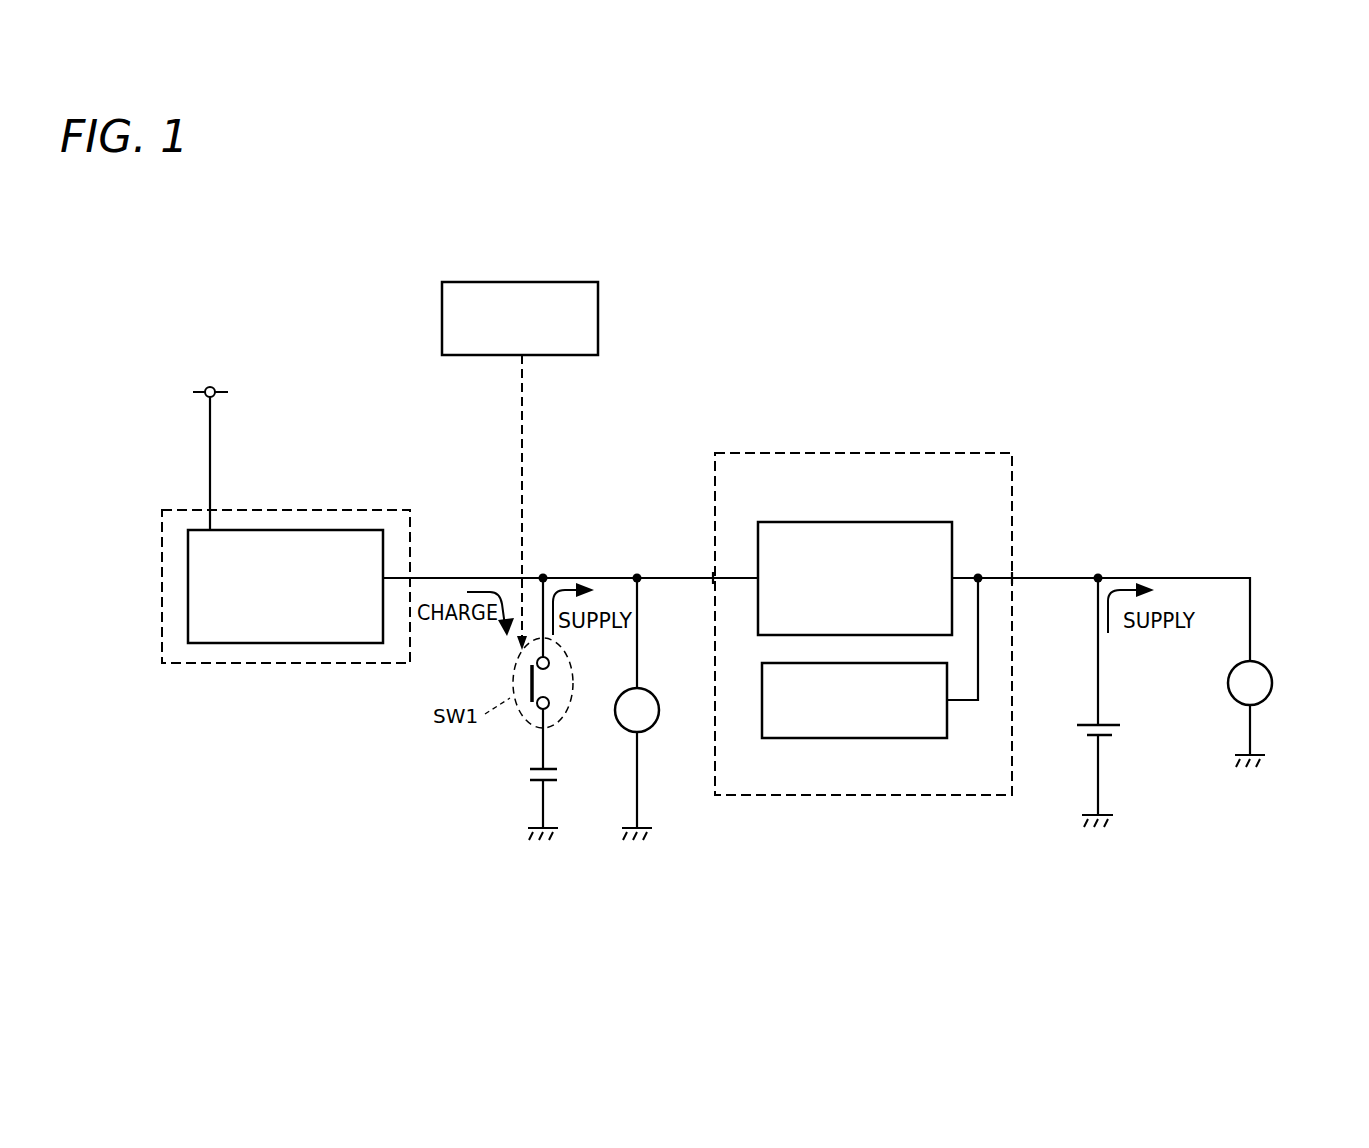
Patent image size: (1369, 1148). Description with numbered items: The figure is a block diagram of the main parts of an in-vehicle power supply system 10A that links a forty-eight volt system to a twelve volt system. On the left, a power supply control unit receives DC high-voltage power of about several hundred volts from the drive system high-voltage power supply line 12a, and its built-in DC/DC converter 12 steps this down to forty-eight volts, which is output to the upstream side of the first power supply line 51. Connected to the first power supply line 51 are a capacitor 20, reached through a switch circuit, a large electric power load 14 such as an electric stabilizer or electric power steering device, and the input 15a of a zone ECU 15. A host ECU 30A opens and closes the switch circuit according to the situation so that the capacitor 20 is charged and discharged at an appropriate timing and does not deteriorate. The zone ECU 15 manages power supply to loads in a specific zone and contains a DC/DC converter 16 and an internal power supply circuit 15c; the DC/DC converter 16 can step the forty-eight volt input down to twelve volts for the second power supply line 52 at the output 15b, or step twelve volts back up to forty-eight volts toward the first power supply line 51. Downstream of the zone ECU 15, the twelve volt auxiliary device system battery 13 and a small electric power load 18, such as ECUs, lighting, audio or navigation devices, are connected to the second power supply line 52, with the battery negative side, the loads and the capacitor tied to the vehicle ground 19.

The in-vehicle power supply system 10A is at (870, 316).
The DC/DC converter 12 is at (223, 647).
The drive system high-voltage power supply line 12a is at (222, 390).
The auxiliary device system battery 13 is at (1117, 722).
The large electric power load 14 is at (659, 718).
The zone ECU 15 is at (815, 453).
The input 15a is at (715, 578).
The output 15b is at (1012, 578).
The internal power supply circuit 15c is at (815, 738).
The DC/DC converter 16 is at (940, 522).
The small electric power load 18 is at (1273, 673).
The ground 19 is at (637, 805).
The capacitor 20 is at (530, 780).
The host ECU 30A is at (442, 306).
The first power supply line 51 is at (672, 578).
The second power supply line 52 is at (1067, 578).